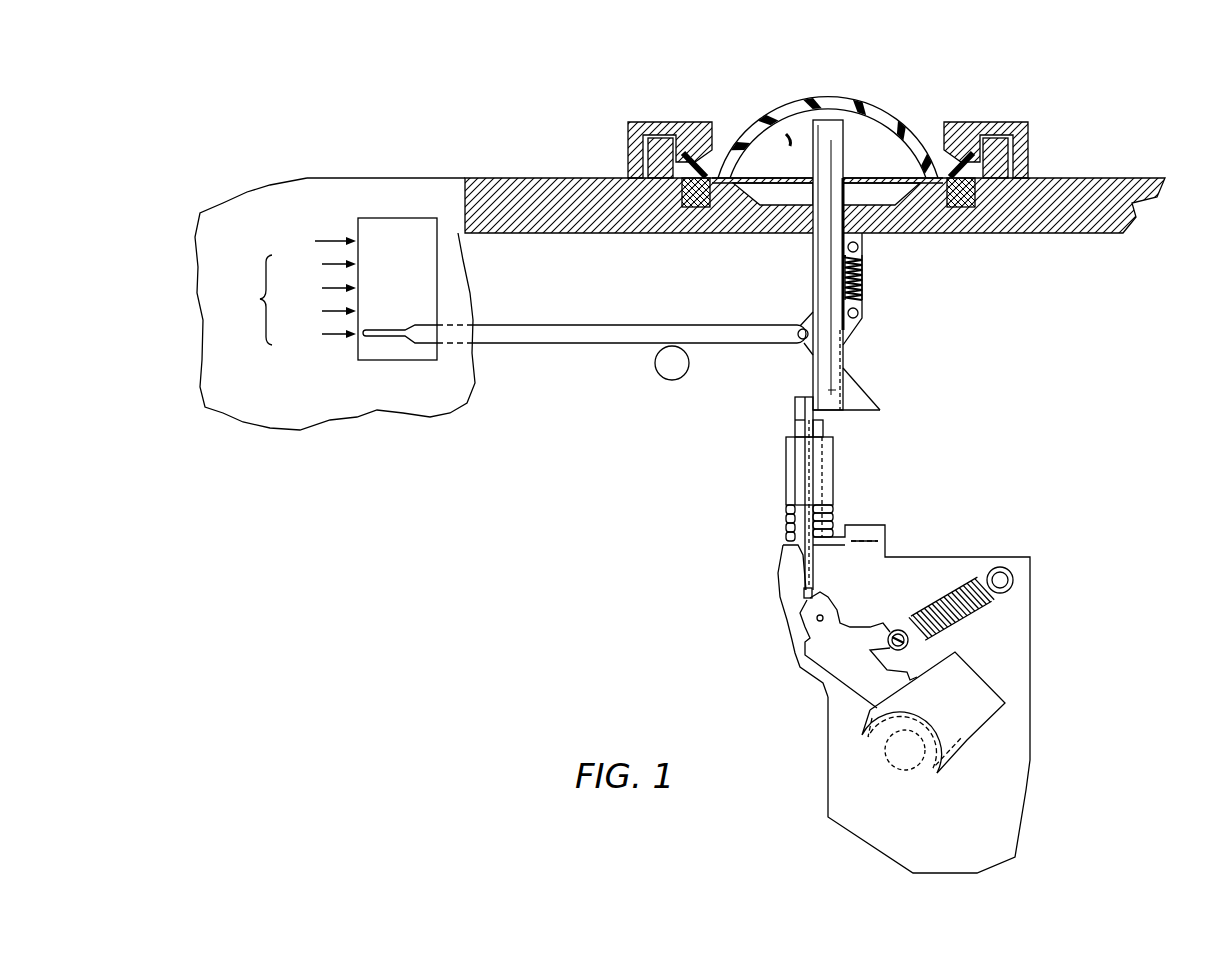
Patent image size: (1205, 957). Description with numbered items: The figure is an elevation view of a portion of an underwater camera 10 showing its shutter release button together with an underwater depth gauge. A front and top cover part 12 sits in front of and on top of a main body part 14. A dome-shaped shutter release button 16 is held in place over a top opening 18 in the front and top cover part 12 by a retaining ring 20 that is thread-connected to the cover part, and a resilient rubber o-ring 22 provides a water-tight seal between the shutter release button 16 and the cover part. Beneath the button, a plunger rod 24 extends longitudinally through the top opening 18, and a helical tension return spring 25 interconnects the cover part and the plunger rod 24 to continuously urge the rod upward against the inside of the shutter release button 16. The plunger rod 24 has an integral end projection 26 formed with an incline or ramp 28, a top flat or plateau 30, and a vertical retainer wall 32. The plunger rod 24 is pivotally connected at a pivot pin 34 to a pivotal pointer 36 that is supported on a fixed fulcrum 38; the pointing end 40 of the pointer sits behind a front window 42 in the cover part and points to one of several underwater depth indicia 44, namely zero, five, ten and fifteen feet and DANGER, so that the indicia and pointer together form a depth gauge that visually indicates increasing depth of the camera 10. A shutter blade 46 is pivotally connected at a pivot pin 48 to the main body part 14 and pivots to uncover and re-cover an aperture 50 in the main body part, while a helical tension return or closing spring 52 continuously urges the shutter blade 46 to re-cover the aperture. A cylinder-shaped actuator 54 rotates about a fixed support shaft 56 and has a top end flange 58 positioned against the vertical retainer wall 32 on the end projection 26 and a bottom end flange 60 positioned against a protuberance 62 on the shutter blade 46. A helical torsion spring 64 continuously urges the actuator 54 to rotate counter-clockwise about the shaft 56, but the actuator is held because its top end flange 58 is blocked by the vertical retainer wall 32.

The underwater camera 10 is at (437, 72).
The front and top cover part 12 is at (445, 182).
The main body part 14 is at (1020, 807).
The shutter release button 16 is at (870, 108).
The top opening 18 is at (845, 213).
The retaining ring 20 is at (667, 121).
The resilient rubber o-ring 22 is at (696, 199).
The plunger rod 24 is at (806, 138).
The helical tension return spring 25 is at (866, 272).
The integral end projection 26 is at (880, 410).
The incline or ramp 28 is at (850, 396).
The top flat or plateau 30 is at (816, 368).
The vertical retainer wall 32 is at (818, 378).
The pivot pin 34 is at (798, 326).
The pivotal pointer 36 is at (592, 325).
The fixed fulcrum 38 is at (662, 371).
The pointing end 40 is at (378, 342).
The front window 42 is at (385, 218).
The underwater depth indicia 44 is at (335, 304).
The shutter blade 46 is at (975, 722).
The pivot pin 48 is at (816, 621).
The aperture 50 is at (903, 762).
The helical tension return or closing spring 52 is at (955, 580).
The cylinder-shaped actuator 54 is at (786, 460).
The fixed support shaft 56 is at (835, 466).
The top end flange 58 is at (795, 400).
The bottom end flange 60 is at (802, 597).
The protuberance 62 is at (813, 594).
The helical torsion spring 64 is at (785, 530).